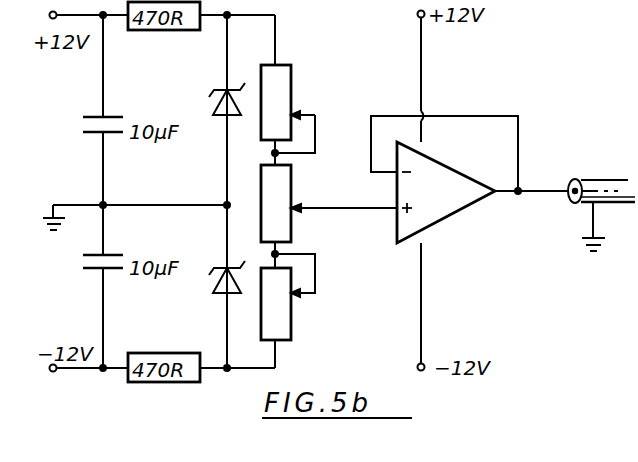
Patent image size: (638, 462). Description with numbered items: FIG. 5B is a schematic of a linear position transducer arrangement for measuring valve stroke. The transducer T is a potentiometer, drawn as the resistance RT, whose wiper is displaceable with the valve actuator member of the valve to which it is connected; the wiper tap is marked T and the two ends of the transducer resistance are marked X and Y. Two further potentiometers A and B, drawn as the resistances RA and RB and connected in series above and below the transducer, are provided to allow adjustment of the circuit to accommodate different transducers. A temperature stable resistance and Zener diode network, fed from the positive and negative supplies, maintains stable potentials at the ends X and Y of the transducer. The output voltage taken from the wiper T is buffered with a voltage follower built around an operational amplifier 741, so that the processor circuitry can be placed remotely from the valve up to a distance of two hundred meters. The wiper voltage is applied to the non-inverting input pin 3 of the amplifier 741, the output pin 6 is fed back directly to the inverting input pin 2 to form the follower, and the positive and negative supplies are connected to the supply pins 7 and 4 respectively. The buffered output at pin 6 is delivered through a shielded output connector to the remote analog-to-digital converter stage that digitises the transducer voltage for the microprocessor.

The operational amplifier 741 is at (446, 192).
The inverting input pin 2 is at (446, 155).
The non-inverting input pin 3 is at (344, 200).
The negative supply pin 4 is at (427, 301).
The output pin 6 is at (531, 181).
The positive supply pin 7 is at (428, 84).
The upper potentiometer RA is at (288, 115).
The center potentiometer RT is at (288, 231).
The lower potentiometer RB is at (276, 304).
The potentiometer A is at (302, 94).
The potentiometer B is at (305, 326).
The node X is at (301, 171).
The node Y is at (302, 240).
The transducer T is at (303, 194).